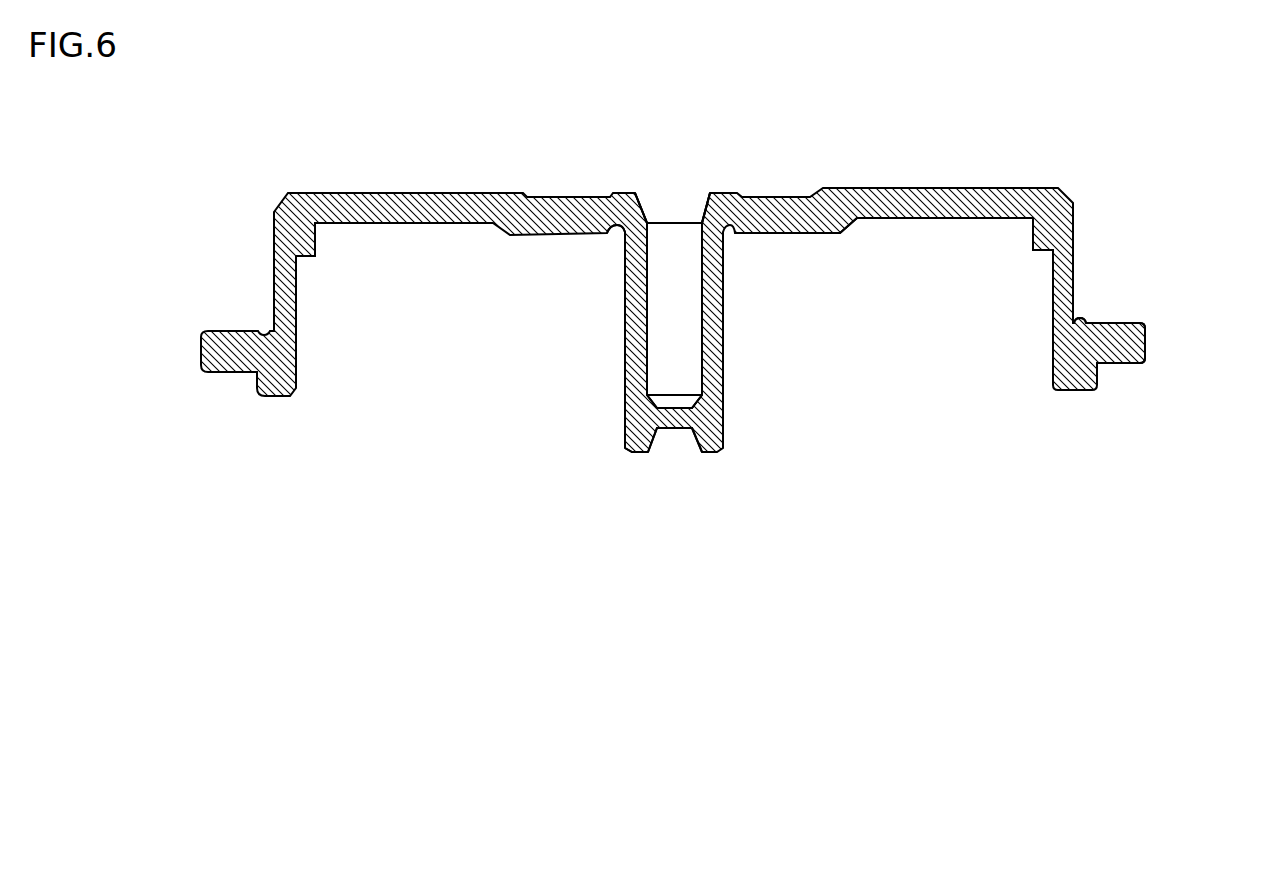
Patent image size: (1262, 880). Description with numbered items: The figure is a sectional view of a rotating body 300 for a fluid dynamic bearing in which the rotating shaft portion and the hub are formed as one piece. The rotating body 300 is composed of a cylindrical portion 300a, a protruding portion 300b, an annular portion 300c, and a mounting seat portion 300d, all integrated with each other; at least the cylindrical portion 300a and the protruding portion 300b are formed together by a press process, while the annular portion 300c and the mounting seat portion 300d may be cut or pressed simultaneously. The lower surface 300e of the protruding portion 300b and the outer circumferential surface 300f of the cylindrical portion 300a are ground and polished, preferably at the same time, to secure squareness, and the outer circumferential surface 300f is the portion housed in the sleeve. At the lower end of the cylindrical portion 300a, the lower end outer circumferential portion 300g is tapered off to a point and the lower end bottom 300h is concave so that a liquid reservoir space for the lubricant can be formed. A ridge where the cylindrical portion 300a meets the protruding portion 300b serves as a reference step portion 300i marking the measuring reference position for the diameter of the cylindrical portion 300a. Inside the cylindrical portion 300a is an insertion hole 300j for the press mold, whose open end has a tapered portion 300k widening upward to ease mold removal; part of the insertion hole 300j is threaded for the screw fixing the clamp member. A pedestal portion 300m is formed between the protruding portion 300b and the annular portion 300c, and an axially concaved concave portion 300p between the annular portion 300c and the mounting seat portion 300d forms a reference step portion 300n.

The rotating body 300 is at (787, 171).
The cylindrical portion 300a is at (723, 335).
The protruding portion 300b is at (920, 187).
The annular portion 300c is at (1073, 271).
The mounting seat portion 300d is at (1128, 323).
The lower surface 300e is at (807, 235).
The outer circumferential surface 300f is at (723, 297).
The lower end outer circumferential portion 300g is at (630, 443).
The lower end bottom 300h is at (675, 428).
The reference step portion 300i is at (623, 236).
The insertion hole 300j is at (649, 287).
The tapered portion 300k is at (646, 210).
The pedestal portion 300m is at (1033, 249).
The reference step portion 300n is at (1082, 324).
The concave portion 300p is at (1092, 318).